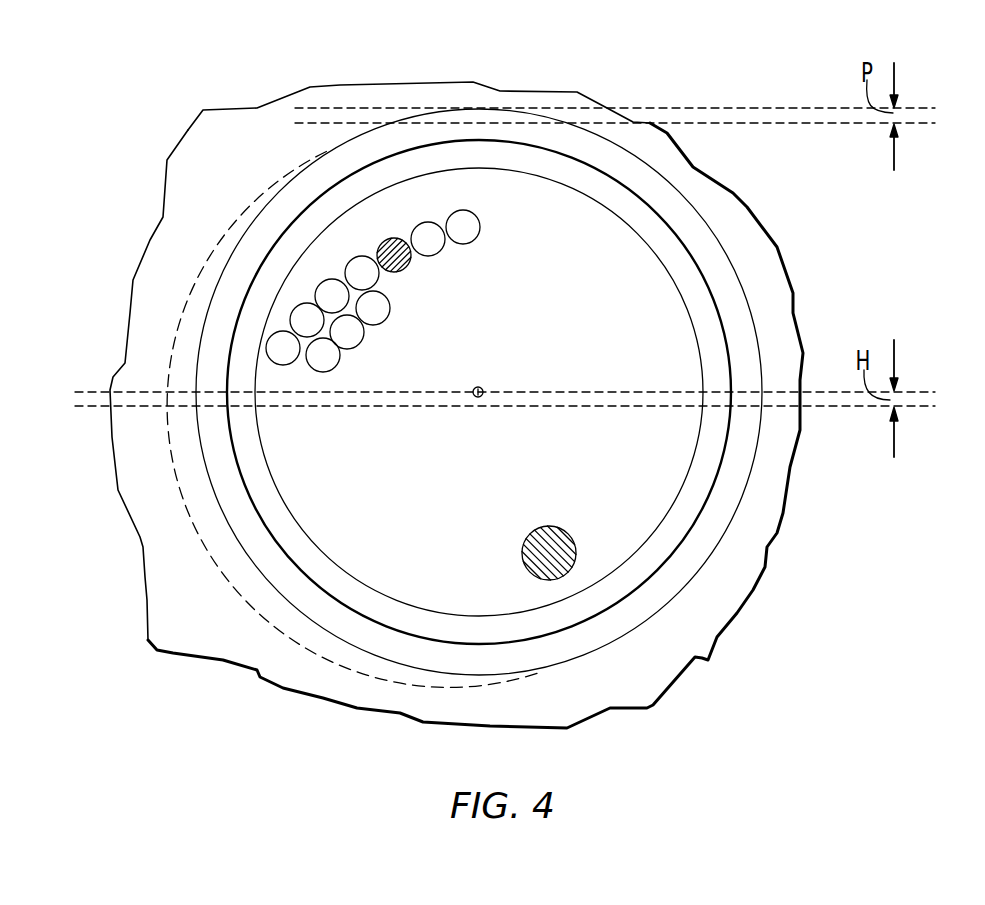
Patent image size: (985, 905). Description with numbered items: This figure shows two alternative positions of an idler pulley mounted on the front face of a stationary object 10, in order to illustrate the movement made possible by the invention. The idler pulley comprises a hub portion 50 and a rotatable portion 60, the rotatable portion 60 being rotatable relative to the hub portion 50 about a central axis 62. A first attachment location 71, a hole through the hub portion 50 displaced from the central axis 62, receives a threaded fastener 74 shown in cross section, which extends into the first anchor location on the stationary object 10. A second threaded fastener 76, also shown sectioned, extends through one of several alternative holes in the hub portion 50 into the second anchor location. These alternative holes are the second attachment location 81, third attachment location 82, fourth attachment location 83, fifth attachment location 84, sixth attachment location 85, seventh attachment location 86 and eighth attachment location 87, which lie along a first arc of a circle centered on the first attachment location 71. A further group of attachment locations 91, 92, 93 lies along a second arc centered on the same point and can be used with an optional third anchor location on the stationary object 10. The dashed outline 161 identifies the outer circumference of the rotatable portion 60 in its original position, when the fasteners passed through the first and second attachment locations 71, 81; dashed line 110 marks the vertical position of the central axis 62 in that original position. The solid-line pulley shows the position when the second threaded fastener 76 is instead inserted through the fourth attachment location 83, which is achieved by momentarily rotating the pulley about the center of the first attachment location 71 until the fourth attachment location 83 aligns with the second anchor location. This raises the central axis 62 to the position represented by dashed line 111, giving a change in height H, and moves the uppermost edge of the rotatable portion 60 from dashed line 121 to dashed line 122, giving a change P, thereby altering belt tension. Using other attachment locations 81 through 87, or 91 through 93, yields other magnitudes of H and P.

The stationary object 10 is at (380, 90).
The hub portion 50 is at (647, 268).
The rotatable portion 60 is at (727, 288).
The central axis 62 is at (480, 388).
The first attachment location 71 is at (572, 532).
The threaded fastener 74 is at (540, 540).
The second threaded fastener 76 is at (406, 264).
The second attachment location 81 is at (480, 225).
The third attachment location 82 is at (440, 246).
The fourth attachment location 83 is at (392, 248).
The fifth attachment location 84 is at (353, 262).
The sixth attachment location 85 is at (325, 290).
The seventh attachment location 86 is at (300, 322).
The eighth attachment location 87 is at (275, 346).
The attachment location 91 is at (380, 313).
The attachment location 92 is at (352, 336).
The attachment location 93 is at (330, 365).
The dashed line 110 is at (913, 410).
The dashed line 111 is at (913, 390).
The dashed line 121 is at (924, 124).
The dashed line 122 is at (922, 107).
The outer circumference of the rotatable portion 161 is at (182, 324).